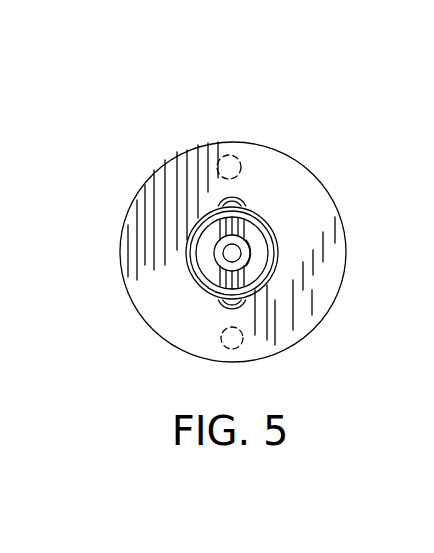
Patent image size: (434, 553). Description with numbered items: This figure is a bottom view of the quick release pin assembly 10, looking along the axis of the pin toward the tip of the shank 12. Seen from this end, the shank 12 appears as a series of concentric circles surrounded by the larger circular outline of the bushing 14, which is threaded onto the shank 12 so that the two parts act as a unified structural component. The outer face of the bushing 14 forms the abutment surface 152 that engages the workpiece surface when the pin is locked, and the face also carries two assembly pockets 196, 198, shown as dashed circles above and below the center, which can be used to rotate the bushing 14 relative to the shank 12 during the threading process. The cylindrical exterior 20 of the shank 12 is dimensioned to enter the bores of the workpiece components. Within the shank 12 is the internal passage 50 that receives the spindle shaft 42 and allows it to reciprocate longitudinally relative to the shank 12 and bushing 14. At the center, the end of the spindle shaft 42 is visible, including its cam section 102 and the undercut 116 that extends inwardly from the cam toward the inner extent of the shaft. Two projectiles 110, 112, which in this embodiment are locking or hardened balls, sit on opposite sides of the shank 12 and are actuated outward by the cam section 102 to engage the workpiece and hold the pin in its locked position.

The quick release pin assembly 10 is at (248, 112).
The shank 12 is at (268, 228).
The bushing 14 is at (328, 308).
The exterior 20 is at (277, 253).
The spindle shaft 42 is at (217, 266).
The internal passage 50 is at (243, 262).
The cam section 102 is at (217, 241).
The projectile 110 is at (236, 200).
The projectile 112 is at (230, 303).
The undercut 116 is at (223, 254).
The abutment surface 152 is at (310, 228).
The assembly pocket 196 is at (222, 163).
The assembly pocket 198 is at (225, 342).